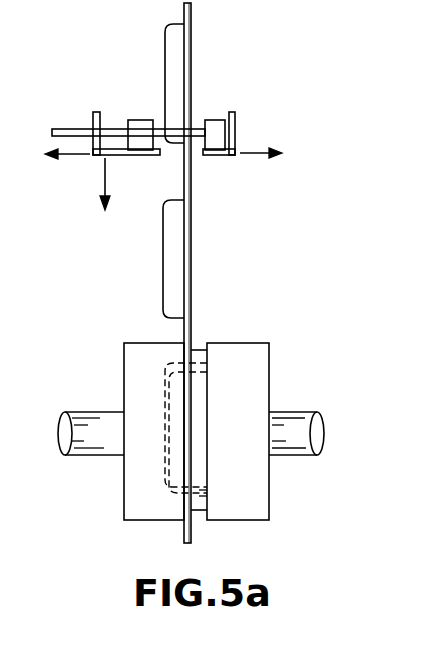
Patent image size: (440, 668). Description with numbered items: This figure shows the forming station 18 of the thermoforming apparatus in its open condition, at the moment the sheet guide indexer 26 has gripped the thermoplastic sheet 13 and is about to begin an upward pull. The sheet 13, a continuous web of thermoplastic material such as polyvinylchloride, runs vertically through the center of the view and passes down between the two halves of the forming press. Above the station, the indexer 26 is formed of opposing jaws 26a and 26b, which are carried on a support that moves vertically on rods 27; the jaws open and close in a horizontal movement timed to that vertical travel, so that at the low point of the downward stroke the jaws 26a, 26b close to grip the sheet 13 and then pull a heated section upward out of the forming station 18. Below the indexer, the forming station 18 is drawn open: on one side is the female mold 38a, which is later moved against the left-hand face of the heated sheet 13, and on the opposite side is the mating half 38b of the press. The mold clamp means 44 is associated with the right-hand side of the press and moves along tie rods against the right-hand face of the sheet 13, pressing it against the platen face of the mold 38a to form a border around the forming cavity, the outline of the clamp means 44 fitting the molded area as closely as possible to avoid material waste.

The thermoplastic sheet 13 is at (192, 13).
The forming station 18 is at (218, 440).
The sheet guide indexer 26 is at (163, 144).
The jaw 26a is at (235, 158).
The jaw 26b is at (90, 157).
The rods 27 is at (75, 129).
The female mold 38a is at (143, 502).
The right housing block 38b is at (262, 490).
The mold clamp means 44 is at (197, 515).